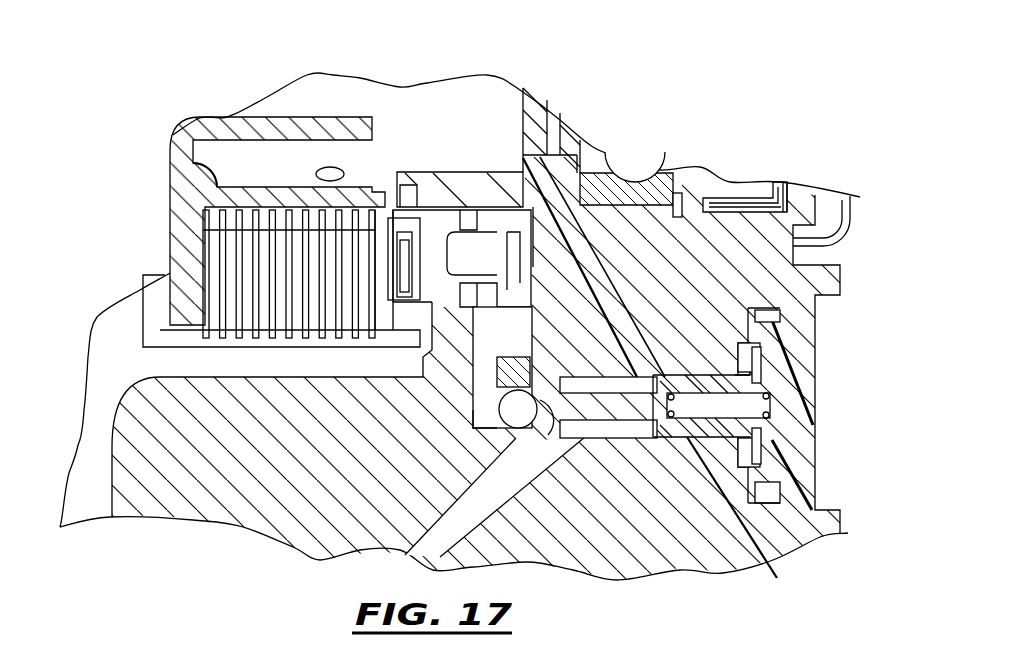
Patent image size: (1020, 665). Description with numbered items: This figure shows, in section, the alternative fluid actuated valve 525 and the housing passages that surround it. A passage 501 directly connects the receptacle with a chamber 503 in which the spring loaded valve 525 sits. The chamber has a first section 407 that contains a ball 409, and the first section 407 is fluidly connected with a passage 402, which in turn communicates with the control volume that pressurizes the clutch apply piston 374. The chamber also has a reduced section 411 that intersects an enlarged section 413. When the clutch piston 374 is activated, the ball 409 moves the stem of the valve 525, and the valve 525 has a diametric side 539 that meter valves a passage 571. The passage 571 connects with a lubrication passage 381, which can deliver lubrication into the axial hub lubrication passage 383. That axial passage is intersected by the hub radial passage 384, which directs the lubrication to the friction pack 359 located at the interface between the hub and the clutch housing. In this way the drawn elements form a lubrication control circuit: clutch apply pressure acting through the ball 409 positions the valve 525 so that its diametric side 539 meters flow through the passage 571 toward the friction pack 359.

The hub radial passage 384 is at (327, 169).
The hub lubrication passage 383 is at (193, 152).
The friction pack 359 is at (220, 254).
The clutch apply piston 374 is at (493, 220).
The lubrication passage 381 is at (440, 172).
The passage 571 is at (599, 272).
The passage 402 is at (530, 322).
The first section 407 is at (480, 417).
The passage 501 is at (455, 500).
The ball 409 is at (517, 430).
The reduced section 411 is at (550, 438).
The chamber 503 is at (607, 377).
The enlarged section 413 is at (610, 438).
The fluid actuated valve 525 is at (668, 375).
The diametric side 539 is at (748, 521).